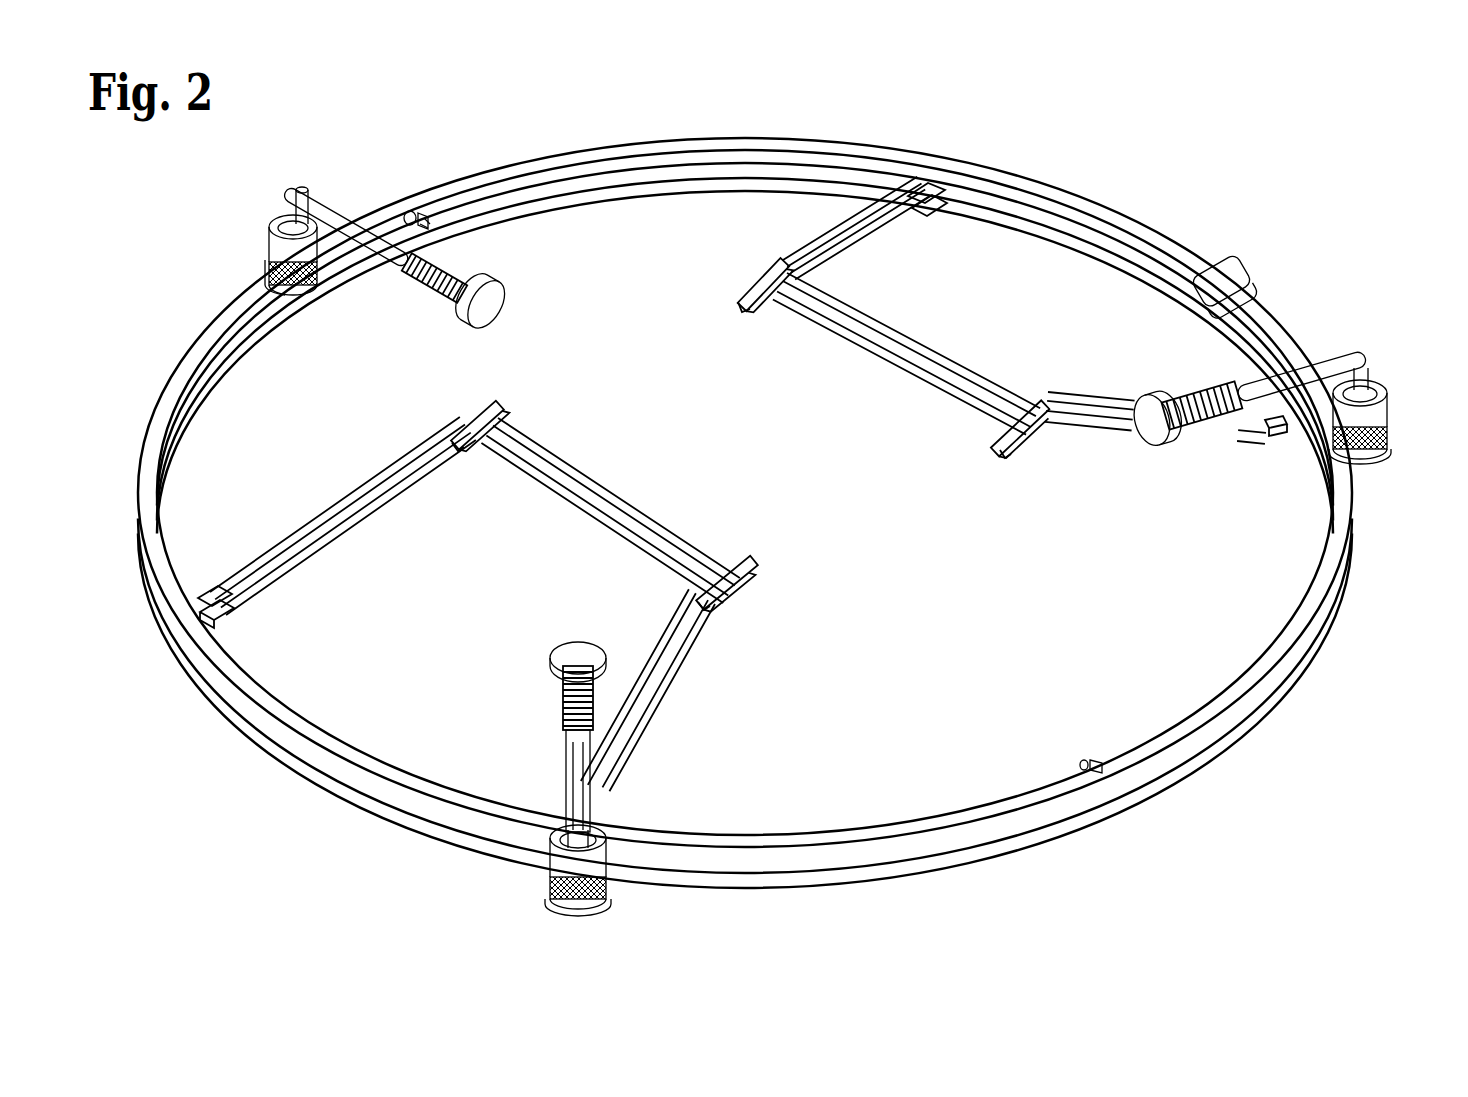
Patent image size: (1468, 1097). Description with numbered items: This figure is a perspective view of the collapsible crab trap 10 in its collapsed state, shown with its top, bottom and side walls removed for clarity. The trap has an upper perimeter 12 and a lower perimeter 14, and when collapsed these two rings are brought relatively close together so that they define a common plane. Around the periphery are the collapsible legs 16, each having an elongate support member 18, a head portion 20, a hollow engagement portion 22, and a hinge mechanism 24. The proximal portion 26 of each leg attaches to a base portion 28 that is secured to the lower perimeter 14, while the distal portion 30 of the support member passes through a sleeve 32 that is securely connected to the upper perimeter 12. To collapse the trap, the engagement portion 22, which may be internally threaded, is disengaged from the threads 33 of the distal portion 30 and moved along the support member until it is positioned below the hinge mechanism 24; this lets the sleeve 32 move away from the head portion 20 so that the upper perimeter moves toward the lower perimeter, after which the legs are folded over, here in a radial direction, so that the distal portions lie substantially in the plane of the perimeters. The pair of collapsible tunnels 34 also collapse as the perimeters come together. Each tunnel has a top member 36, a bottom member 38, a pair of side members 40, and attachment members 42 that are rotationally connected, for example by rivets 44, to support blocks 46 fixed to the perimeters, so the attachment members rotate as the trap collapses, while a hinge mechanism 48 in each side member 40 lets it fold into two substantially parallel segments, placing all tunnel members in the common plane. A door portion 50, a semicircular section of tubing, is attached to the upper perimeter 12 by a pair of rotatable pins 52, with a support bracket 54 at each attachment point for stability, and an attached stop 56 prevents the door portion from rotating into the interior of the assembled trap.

The collapsible crab trap 10 is at (1158, 174).
The upper perimeter 12 is at (722, 137).
The lower perimeter 14 is at (625, 210).
The collapsible legs 16 is at (377, 292).
The elongate support member 18 is at (340, 212).
The head portion 20 is at (497, 312).
The hollow engagement portion 22 is at (265, 265).
The hinge mechanism 24 is at (292, 190).
The proximal portion 26 is at (272, 222).
The base portion 28 is at (1382, 452).
The distal portion 30 is at (395, 262).
The sleeve 32 is at (272, 232).
The threads 33 is at (440, 272).
The collapsible tunnels 34 is at (902, 404).
The top member 36 is at (912, 330).
The bottom member 38 is at (875, 342).
The side members 40 is at (772, 285).
The attachment members 42 is at (845, 240).
The rivets 44 is at (940, 205).
The support block 46 is at (935, 188).
The hinge mechanism 48 is at (752, 308).
The door portion 50 is at (737, 178).
The rotatable pins 52 is at (423, 212).
The support bracket 54 is at (428, 227).
The stop 56 is at (1232, 284).